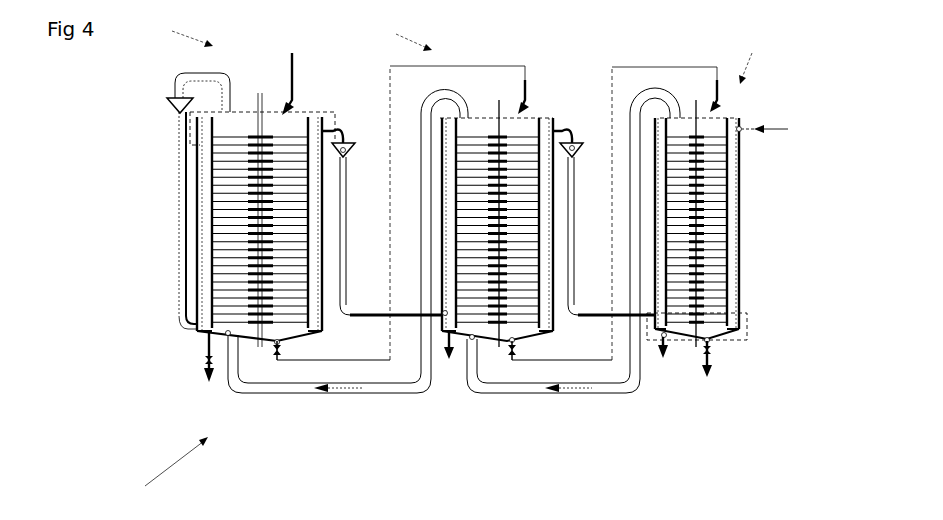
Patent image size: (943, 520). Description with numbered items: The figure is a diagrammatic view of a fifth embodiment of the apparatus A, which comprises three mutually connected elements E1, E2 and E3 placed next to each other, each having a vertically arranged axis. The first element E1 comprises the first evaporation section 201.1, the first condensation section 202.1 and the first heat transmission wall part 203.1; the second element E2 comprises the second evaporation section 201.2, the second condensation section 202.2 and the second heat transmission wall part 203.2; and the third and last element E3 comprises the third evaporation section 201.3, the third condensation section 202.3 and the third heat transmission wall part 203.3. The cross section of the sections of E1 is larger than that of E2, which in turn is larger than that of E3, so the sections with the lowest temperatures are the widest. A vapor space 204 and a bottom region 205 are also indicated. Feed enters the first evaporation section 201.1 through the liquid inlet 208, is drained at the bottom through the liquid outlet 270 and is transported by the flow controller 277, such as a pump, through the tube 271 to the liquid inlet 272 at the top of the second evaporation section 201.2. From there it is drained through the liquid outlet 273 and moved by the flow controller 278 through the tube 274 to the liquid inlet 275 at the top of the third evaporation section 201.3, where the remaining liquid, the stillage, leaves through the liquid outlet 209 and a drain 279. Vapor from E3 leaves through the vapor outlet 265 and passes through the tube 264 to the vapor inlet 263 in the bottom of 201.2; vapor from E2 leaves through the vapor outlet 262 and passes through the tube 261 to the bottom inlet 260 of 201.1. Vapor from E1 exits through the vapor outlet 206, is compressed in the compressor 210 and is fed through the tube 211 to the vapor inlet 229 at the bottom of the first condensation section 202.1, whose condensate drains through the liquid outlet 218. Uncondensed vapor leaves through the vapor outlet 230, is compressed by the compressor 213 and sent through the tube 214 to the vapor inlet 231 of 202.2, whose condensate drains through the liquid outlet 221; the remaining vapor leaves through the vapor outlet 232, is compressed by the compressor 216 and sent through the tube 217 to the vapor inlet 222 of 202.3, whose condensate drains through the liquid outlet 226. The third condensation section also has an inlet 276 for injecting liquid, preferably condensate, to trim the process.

The first element E1 is at (179, 34).
The second element E2 is at (399, 38).
The third and last element E3 is at (750, 59).
The apparatus A is at (168, 476).
The first evaporation section 201.1 is at (235, 181).
The first condensation section 202.1 is at (207, 203).
The first heat transmission wall part 203.1 is at (235, 245).
The second evaporation section 201.2 is at (529, 148).
The second condensation section 202.2 is at (543, 123).
The second heat transmission wall part 203.2 is at (539, 321).
The third and last evaporation section 201.3 is at (712, 223).
The third and last condensation section 202.3 is at (732, 260).
The third and last heat transmission wall part 203.3 is at (728, 300).
The vapor space 204 is at (274, 128).
The bottom outlet region 205 is at (714, 326).
The vapor outlet 206 is at (229, 112).
The liquid inlet 208 is at (263, 133).
The liquid outlet 209 is at (709, 341).
The compressor 210 is at (180, 104).
The tube 211 is at (181, 130).
The compressor 213 is at (345, 152).
The tube 214 is at (343, 183).
The compressor 216 is at (573, 151).
The tube 217 is at (572, 235).
The liquid outlet 218 is at (207, 334).
The liquid outlet 221 is at (447, 334).
The vapor inlet 222 is at (657, 315).
The liquid outlet 226 is at (666, 338).
The vapor inlet 229 is at (193, 326).
The vapor outlet 230 is at (330, 135).
The vapor inlet 231 is at (443, 312).
The vapor outlet 232 is at (554, 132).
The bottom outlet 260 is at (230, 336).
The tube 261 is at (278, 392).
The vapor outlet 262 is at (468, 115).
The vapor inlet 263 is at (474, 340).
The tube 264 is at (528, 392).
The vapor outlet 265 is at (677, 112).
The liquid outlet 270 is at (280, 342).
The tube 271 is at (500, 66).
The liquid inlet 272 is at (501, 133).
The liquid outlet 273 is at (515, 341).
The tube 274 is at (630, 67).
The liquid inlet 275 is at (698, 136).
The gas inlet 276 is at (741, 131).
The flow controller 277 is at (279, 351).
The flow controller 278 is at (514, 352).
The product outlet 279 is at (710, 349).